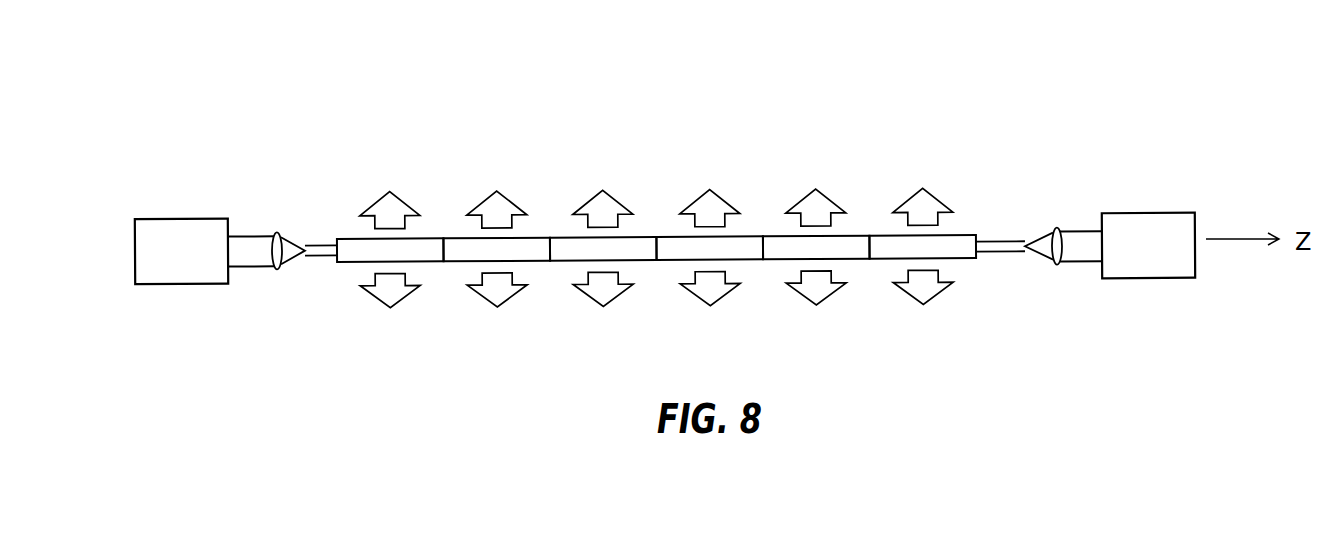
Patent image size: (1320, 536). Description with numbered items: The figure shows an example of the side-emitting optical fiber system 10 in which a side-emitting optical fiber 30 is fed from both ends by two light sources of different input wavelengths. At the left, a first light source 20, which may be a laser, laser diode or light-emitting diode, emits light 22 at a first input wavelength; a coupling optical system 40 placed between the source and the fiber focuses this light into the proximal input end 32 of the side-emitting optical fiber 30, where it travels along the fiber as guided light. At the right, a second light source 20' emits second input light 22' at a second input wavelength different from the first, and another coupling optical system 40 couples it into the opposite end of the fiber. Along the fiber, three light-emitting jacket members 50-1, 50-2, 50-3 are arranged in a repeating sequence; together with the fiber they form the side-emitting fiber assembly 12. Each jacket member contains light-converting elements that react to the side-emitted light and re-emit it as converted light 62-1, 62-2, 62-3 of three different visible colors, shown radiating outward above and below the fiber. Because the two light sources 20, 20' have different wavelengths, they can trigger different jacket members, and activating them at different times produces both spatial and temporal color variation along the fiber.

The side-emitting optical fiber system 10 is at (206, 119).
The side-emitting fiber assembly 12 is at (933, 140).
The light source 20 is at (181, 252).
The second light source 20' is at (1148, 246).
The light 22 is at (229, 279).
The second input light 22' is at (1078, 211).
The side-emitting optical fiber 30 is at (325, 258).
The input end 32 is at (304, 247).
The coupling optical system 40 is at (275, 231).
The light-emitting jacket member 50-1 is at (350, 263).
The light-emitting jacket member 50-2 is at (465, 263).
The light-emitting jacket member 50-3 is at (571, 263).
The converted light 62-1 is at (403, 204).
The converted light 62-2 is at (511, 203).
The converted light 62-3 is at (617, 202).